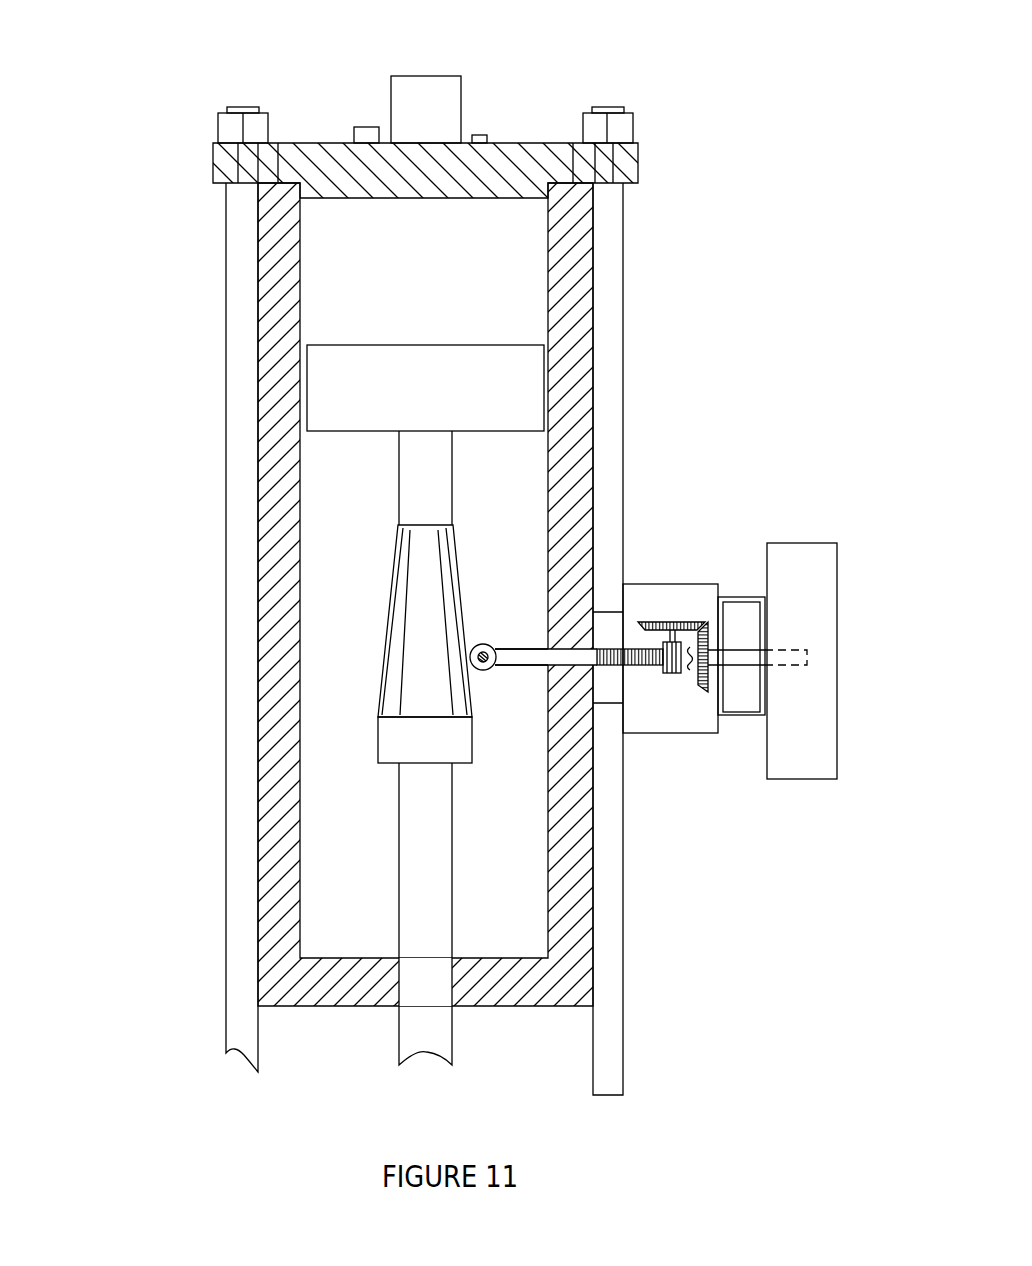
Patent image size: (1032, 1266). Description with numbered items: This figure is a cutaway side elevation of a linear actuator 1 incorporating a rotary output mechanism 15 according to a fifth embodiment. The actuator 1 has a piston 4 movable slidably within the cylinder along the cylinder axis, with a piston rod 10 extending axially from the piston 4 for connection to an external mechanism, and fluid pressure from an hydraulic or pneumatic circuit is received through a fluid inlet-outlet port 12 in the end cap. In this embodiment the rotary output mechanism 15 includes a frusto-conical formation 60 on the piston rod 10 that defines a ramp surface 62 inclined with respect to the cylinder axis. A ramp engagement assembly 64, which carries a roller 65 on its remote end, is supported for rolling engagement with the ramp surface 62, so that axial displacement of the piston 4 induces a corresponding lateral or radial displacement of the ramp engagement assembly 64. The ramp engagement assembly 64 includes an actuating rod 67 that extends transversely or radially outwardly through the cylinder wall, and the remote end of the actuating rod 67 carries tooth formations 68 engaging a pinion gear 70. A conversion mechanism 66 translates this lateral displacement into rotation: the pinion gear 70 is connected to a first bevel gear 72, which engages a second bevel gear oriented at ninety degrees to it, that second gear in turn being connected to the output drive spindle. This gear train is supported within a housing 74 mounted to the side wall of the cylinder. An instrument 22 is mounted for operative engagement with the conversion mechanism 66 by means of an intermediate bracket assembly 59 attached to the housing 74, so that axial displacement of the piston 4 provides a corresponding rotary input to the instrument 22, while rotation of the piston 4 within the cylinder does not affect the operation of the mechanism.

The linear actuator 1 is at (126, 430).
The piston 4 is at (515, 384).
The piston rod 10 is at (437, 909).
The fluid inlet-outlet port 12 is at (447, 93).
The rotary output mechanism 15 is at (420, 631).
The instrument 22 is at (823, 609).
The intermediate bracket assembly 59 is at (750, 603).
The frusto-conical formation 60 is at (356, 612).
The ramp surface 62 is at (473, 693).
The ramp engagement assembly 64 is at (520, 640).
The roller 65 is at (478, 644).
The conversion mechanism 66 is at (669, 596).
The actuating rod 67 is at (530, 658).
The tooth formations 68 is at (645, 657).
The pinion gear 70 is at (675, 663).
The first bevel gear 72 is at (687, 622).
The housing 74 is at (707, 732).